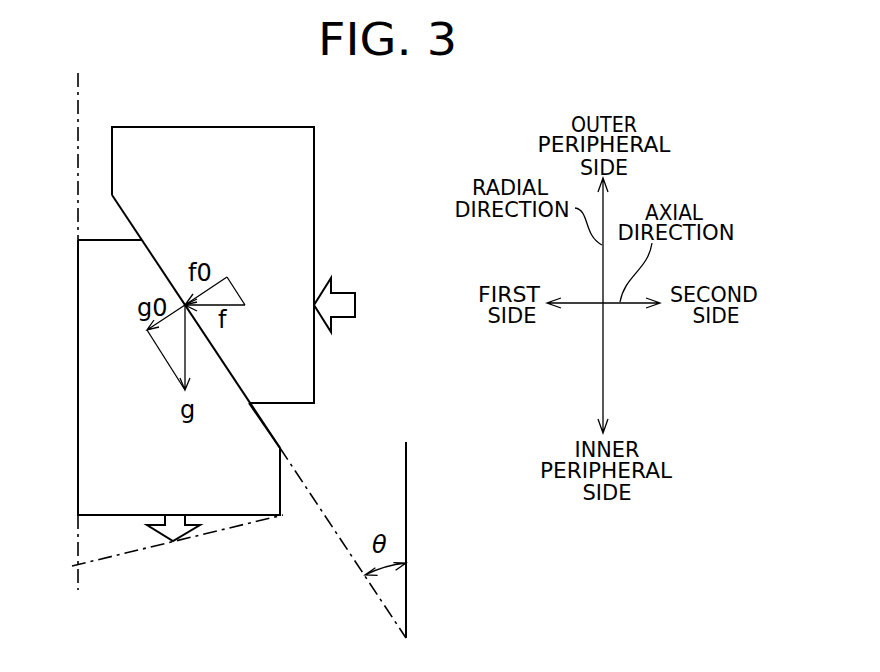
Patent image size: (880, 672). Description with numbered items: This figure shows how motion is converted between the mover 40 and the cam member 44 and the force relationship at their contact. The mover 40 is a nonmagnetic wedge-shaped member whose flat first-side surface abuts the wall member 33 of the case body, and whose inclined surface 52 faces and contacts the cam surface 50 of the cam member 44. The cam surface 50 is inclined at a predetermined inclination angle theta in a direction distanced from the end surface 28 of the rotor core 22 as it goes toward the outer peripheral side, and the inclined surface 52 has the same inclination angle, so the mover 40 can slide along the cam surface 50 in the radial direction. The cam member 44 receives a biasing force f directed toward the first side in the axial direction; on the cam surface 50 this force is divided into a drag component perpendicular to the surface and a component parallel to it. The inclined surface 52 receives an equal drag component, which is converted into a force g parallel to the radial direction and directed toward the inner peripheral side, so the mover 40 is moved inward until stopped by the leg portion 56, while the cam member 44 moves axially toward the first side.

The rotor core 22 is at (428, 540).
The end surface 28 is at (395, 510).
The wall member 33 is at (45, 331).
The mover 40 is at (110, 487).
The cam member 44 is at (215, 146).
The cam surface 50 is at (109, 216).
The inclined surface 52 is at (282, 433).
The leg portion 56 is at (177, 545).